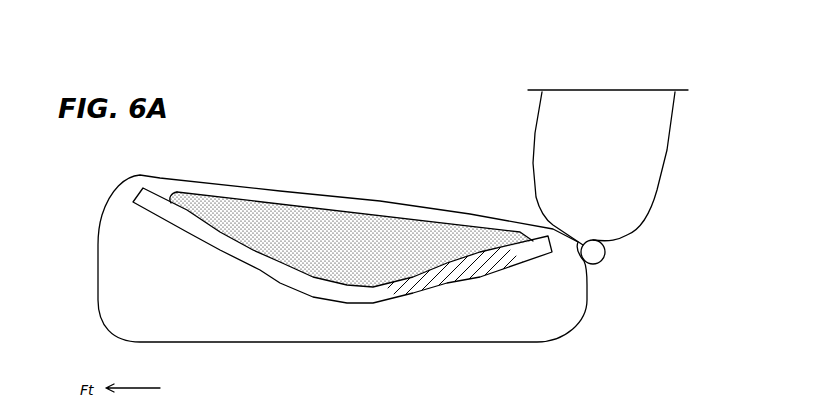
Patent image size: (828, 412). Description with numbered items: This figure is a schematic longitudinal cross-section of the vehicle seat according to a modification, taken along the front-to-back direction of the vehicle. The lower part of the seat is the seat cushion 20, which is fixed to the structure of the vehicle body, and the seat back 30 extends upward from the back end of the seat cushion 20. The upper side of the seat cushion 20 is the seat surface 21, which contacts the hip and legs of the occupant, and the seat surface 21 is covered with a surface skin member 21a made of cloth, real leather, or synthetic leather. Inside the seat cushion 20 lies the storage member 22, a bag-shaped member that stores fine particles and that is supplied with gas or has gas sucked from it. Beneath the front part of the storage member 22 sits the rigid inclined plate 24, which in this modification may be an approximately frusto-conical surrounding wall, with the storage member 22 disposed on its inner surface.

The seat cushion 20 is at (155, 176).
The seat surface 21 is at (306, 196).
The surface skin member 21a is at (339, 200).
The storage member 22 is at (255, 213).
The rigid inclined plate 24 is at (530, 238).
The seat back 30 is at (583, 92).